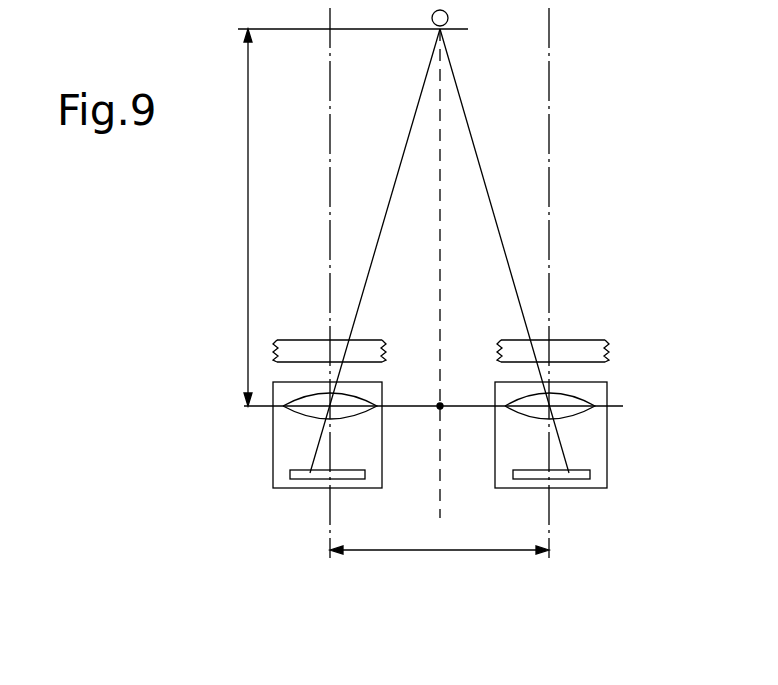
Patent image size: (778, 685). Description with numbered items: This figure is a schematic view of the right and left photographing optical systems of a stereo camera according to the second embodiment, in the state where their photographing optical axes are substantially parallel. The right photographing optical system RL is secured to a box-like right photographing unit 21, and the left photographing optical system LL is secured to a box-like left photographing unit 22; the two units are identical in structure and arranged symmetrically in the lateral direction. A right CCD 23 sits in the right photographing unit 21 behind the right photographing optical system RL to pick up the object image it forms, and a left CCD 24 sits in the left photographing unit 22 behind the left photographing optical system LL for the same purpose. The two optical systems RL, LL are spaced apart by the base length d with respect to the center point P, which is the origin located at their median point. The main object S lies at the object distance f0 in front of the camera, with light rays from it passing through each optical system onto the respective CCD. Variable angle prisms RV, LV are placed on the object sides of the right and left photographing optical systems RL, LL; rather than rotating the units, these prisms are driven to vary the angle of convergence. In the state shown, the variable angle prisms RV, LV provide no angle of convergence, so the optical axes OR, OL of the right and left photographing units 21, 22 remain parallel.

The main object S is at (448, 18).
The optical axis of left photographing unit OL is at (330, 128).
The optical axis of right photographing unit OR is at (549, 140).
The object distance f0 is at (234, 217).
The left variable angle prism LV is at (293, 345).
The right variable angle prism RV is at (590, 340).
The left photographing optical system LL is at (353, 398).
The right photographing optical system RL is at (520, 400).
The center point P is at (438, 410).
The left photographing unit 22 is at (273, 442).
The right photographing unit 21 is at (607, 440).
The left CCD 24 is at (303, 480).
The right CCD 23 is at (565, 480).
The base length d is at (439, 538).